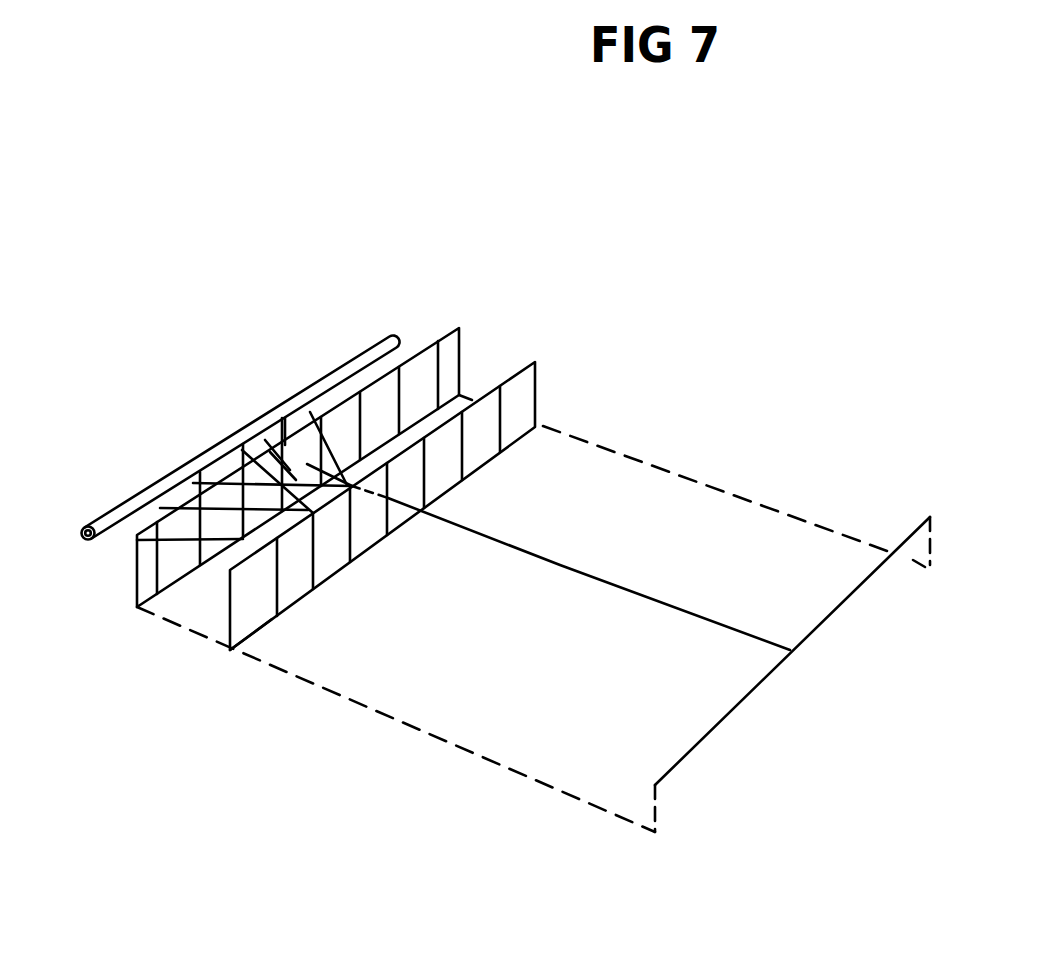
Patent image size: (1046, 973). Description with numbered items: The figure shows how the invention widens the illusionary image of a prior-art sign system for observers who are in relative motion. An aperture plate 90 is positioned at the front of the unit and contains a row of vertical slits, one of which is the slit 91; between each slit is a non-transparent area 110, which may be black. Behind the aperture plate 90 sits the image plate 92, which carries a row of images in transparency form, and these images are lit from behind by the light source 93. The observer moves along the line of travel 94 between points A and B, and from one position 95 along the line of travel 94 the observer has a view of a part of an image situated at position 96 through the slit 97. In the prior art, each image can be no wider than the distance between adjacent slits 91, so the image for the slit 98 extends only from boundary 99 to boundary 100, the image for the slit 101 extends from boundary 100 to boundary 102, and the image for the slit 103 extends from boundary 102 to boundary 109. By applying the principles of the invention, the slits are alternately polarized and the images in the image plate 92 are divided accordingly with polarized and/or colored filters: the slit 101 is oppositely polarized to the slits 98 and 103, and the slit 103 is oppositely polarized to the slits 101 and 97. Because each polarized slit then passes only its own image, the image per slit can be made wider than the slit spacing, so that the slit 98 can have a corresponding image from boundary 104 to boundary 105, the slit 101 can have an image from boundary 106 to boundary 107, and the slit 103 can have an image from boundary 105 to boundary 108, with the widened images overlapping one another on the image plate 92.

The aperture plate 90 is at (523, 362).
The vertical slit 91 is at (503, 443).
The image plate 92 is at (450, 328).
The light source 93 is at (357, 358).
The line of travel 94 is at (845, 600).
The position along the line of travel 95 is at (790, 650).
The image position 96 is at (290, 445).
The slit 97 is at (387, 537).
The slit 98 is at (272, 619).
The image boundary 99 is at (140, 507).
The image boundary 100 is at (185, 497).
The slit 101 is at (313, 589).
The image boundary 102 is at (242, 475).
The slit 103 is at (350, 562).
The image boundary 104 is at (137, 533).
The image boundary 105 is at (240, 500).
The image boundary 106 is at (175, 494).
The image boundary 107 is at (273, 463).
The image boundary 108 is at (330, 467).
The image boundary 109 is at (287, 470).
The non-transparent area 110 is at (442, 478).